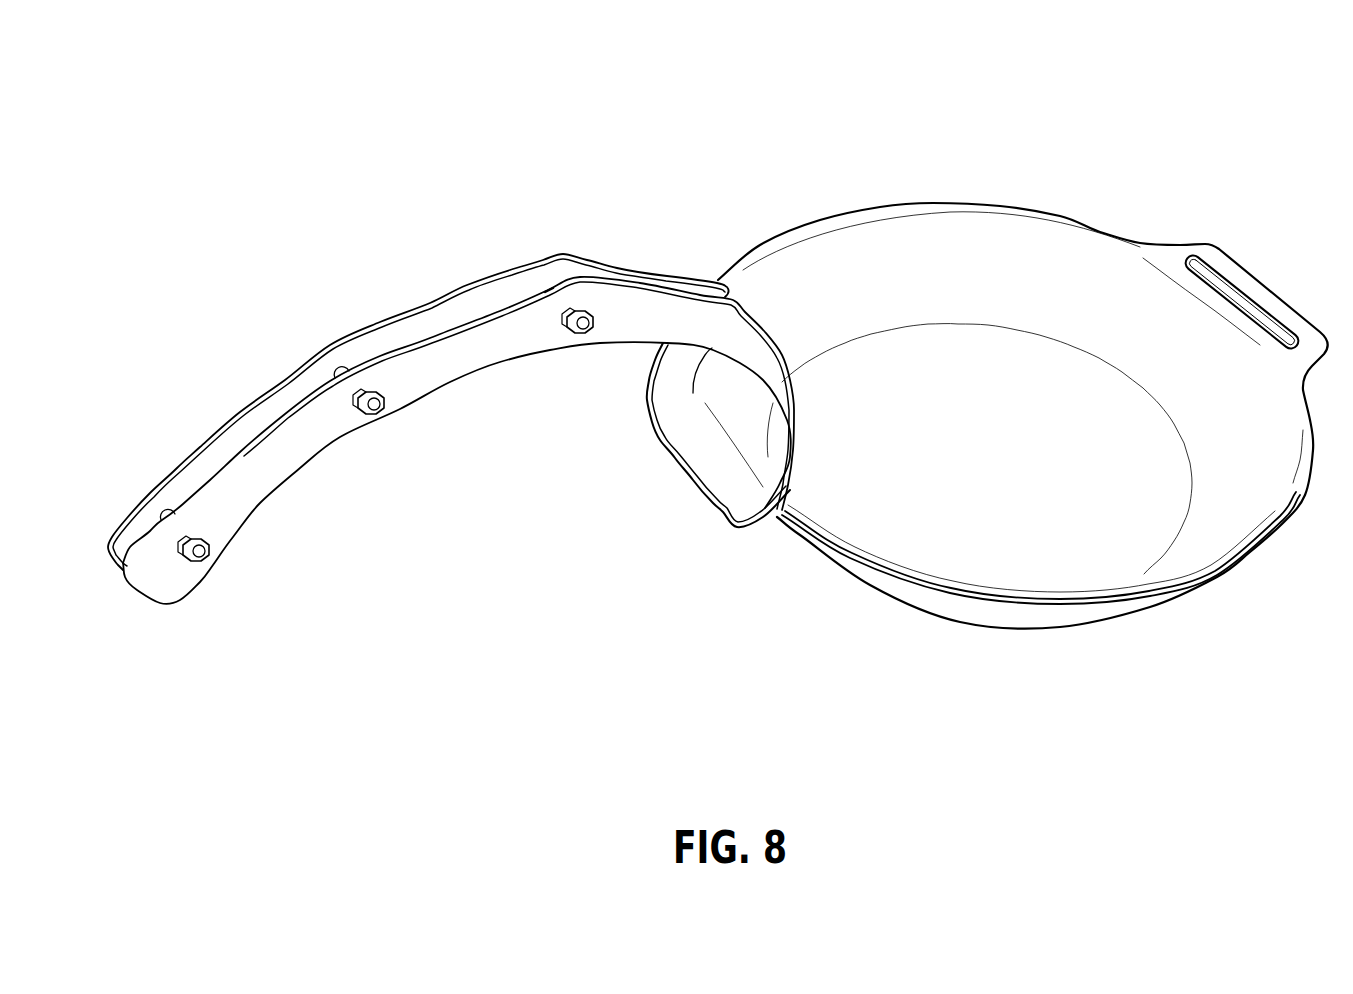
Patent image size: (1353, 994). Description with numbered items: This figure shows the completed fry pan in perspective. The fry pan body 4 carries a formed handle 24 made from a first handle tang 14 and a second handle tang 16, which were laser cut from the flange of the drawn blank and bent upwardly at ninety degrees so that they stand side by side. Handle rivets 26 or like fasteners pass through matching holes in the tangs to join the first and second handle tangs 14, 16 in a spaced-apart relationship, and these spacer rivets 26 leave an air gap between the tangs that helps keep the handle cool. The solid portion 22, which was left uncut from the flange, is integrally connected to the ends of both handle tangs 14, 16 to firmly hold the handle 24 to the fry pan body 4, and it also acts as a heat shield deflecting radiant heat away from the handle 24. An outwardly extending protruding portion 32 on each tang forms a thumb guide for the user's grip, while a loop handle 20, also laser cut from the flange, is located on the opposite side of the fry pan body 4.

The fry pan body 4 is at (974, 227).
The first handle tang 14 is at (460, 358).
The second handle tang 16 is at (463, 290).
The loop handle 20 is at (1228, 265).
The solid portion 22 is at (705, 467).
The handle 24 is at (451, 383).
The handle rivets 26 is at (368, 394).
The outwardly extending protruding portion 32 is at (580, 280).